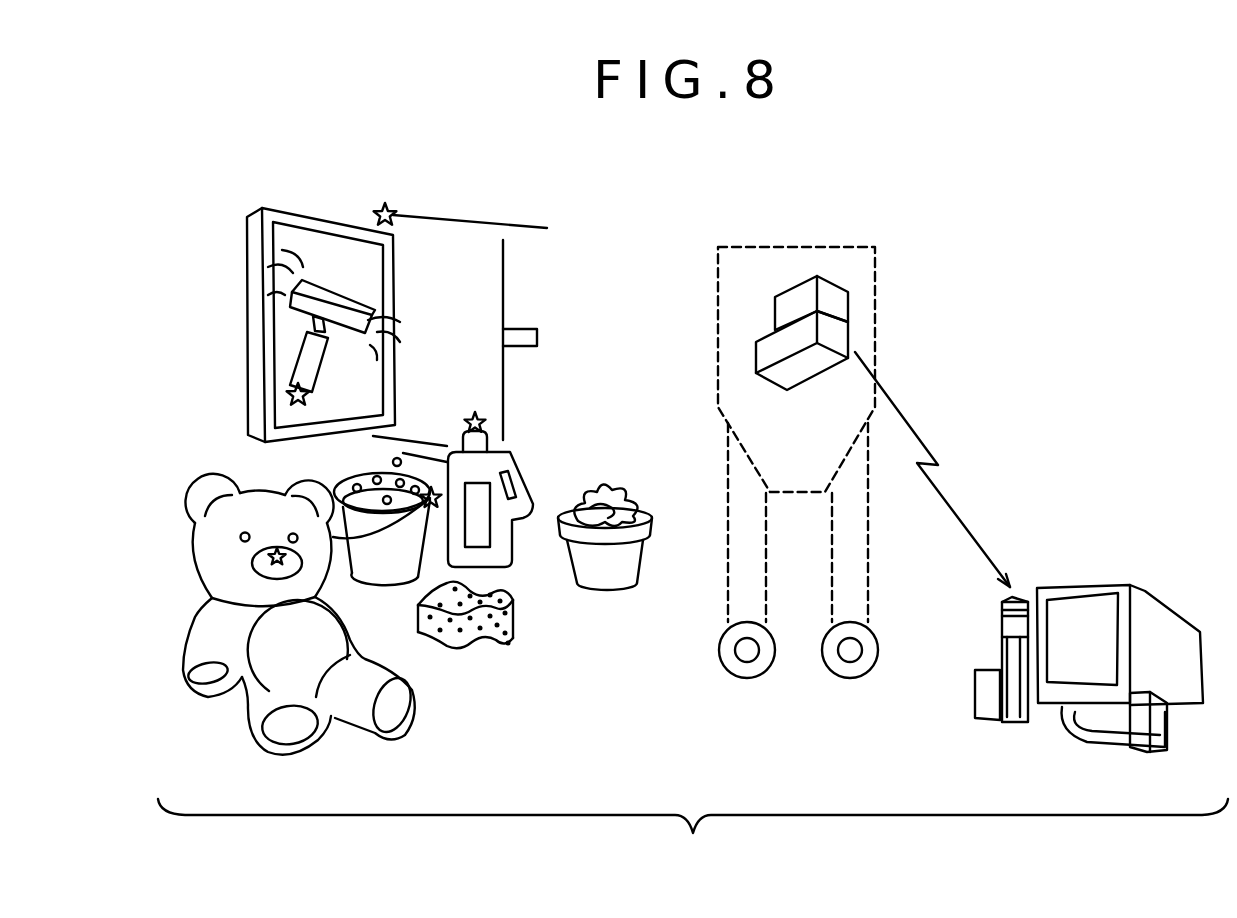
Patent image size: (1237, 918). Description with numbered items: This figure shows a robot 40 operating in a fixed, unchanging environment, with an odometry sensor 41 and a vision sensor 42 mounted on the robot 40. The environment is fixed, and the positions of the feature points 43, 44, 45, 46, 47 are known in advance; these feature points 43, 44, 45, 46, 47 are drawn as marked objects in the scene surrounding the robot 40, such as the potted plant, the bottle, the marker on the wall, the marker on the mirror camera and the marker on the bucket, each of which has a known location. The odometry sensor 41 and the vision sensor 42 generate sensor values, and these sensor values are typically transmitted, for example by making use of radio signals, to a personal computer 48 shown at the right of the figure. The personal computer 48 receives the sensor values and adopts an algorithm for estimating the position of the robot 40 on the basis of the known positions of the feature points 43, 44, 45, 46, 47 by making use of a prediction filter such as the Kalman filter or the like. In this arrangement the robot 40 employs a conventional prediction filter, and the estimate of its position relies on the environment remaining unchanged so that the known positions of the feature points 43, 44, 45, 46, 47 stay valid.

The robot 40 is at (824, 434).
The odometry sensor 41 is at (838, 302).
The vision sensor 42 is at (838, 335).
The feature point 43 is at (605, 474).
The feature point 44 is at (475, 412).
The feature point 45 is at (385, 203).
The feature point 46 is at (300, 406).
The feature point 47 is at (425, 488).
The personal computer 48 is at (1072, 584).